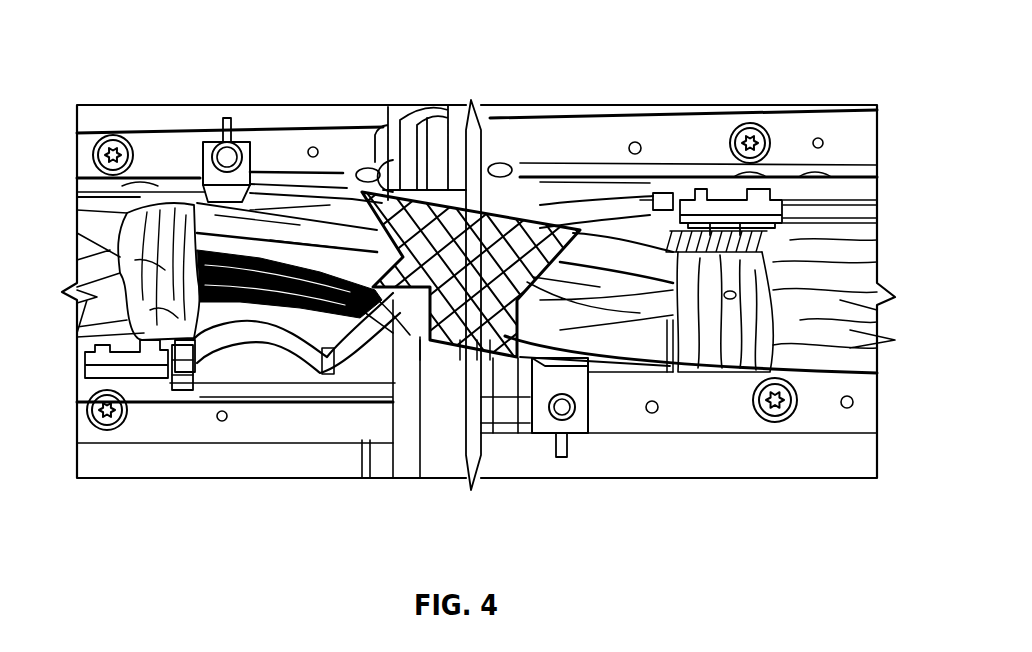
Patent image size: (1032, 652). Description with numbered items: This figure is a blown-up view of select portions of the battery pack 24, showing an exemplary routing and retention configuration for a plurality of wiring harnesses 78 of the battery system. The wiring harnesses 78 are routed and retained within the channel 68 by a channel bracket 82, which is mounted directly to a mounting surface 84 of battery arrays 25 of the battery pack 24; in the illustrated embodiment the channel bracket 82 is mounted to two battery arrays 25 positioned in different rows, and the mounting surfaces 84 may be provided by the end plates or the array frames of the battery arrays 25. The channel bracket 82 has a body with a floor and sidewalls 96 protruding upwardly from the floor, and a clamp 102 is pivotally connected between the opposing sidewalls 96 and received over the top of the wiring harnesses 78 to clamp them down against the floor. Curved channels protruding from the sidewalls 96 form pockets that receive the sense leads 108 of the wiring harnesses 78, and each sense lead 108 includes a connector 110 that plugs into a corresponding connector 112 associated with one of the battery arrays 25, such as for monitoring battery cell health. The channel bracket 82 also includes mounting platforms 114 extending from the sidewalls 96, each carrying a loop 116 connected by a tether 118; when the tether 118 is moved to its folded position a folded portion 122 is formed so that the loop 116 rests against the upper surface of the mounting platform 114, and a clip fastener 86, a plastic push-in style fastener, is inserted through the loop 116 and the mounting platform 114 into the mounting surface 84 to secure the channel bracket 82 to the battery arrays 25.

The battery pack 24 is at (499, 80).
The battery arrays 25 is at (354, 112).
The channel 68 is at (840, 168).
The wiring harnesses 78 is at (872, 247).
The channel bracket 82 is at (332, 178).
The mounting surface 84 is at (180, 148).
The clip fasteners 86 is at (203, 152).
The sidewalls 96 is at (393, 120).
The clamp 102 is at (472, 205).
The sense leads 108 is at (540, 200).
The connector 110 is at (683, 190).
The connector 112 is at (735, 178).
The mounting platform 114 is at (200, 150).
The loop 116 is at (253, 151).
The tether 118 is at (248, 143).
The folded portion 122 is at (227, 117).